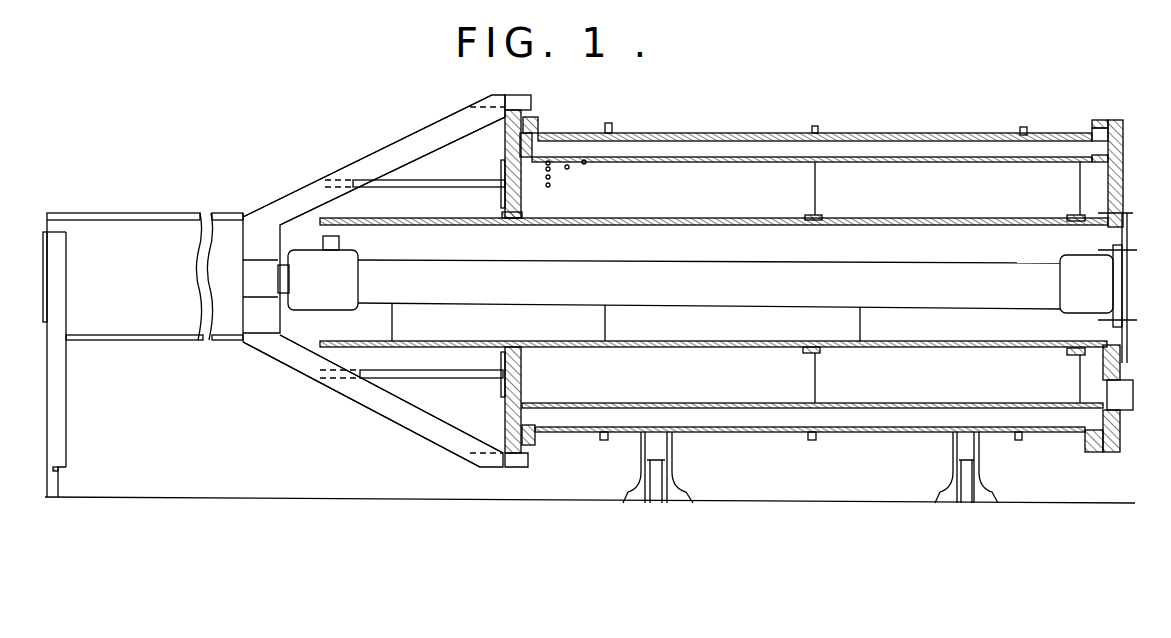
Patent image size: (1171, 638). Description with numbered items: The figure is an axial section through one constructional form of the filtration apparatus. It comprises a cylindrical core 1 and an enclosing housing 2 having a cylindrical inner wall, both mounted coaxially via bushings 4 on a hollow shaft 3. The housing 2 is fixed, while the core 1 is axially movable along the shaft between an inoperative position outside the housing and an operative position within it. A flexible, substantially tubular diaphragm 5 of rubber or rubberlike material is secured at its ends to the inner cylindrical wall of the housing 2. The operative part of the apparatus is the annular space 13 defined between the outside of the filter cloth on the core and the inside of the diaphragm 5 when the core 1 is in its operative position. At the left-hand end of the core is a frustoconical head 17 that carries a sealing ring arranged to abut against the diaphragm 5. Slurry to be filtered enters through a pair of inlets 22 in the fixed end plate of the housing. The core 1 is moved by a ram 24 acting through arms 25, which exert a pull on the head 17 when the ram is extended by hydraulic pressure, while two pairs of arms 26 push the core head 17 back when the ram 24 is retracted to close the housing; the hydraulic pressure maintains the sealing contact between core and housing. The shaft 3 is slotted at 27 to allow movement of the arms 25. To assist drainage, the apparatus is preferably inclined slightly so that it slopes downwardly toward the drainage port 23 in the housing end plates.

The cylindrical core 1 is at (990, 160).
The housing 2 is at (703, 133).
The hollow shaft 3 is at (333, 342).
The bushings 4 is at (815, 352).
The flexible diaphragm 5 is at (903, 140).
The annular space 13 is at (1047, 418).
The frustoconical head 17 is at (510, 178).
The inlets 22 is at (1120, 148).
The drainage port 23 is at (1125, 402).
The ram 24 is at (440, 290).
The arms 25 is at (430, 137).
The arms 26 is at (403, 183).
The slot 27 is at (152, 342).